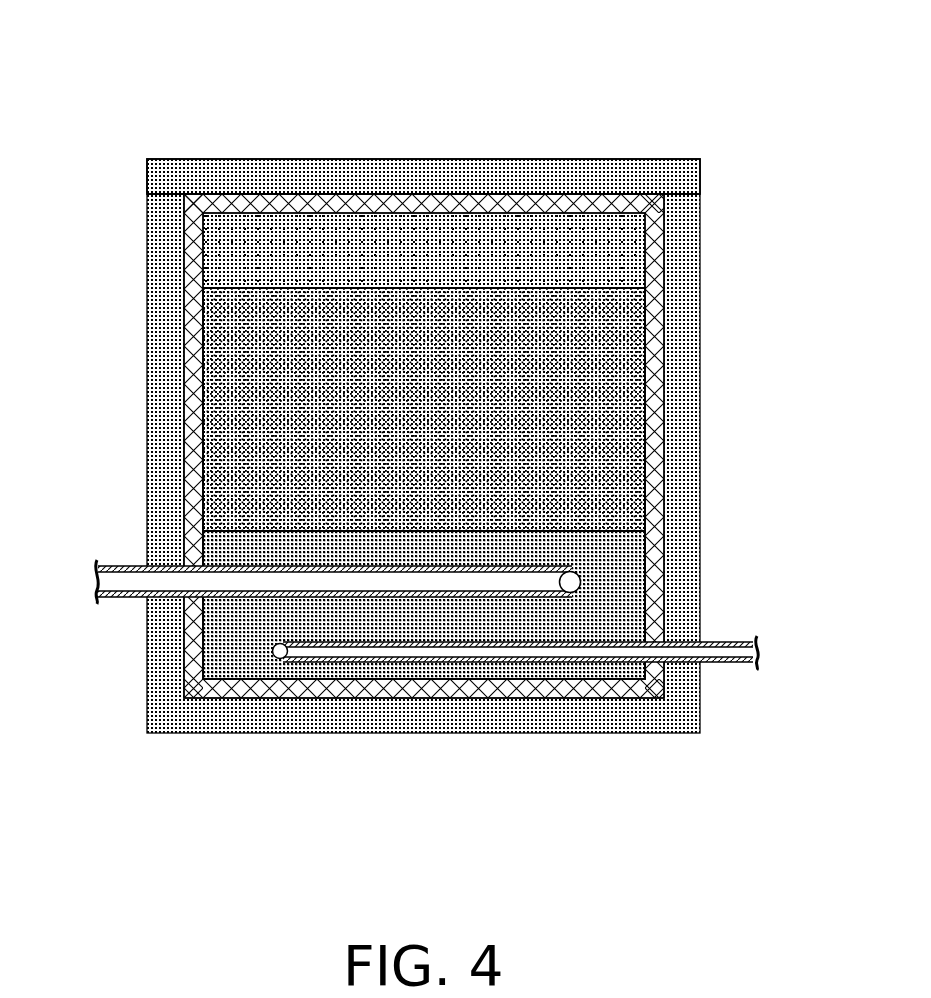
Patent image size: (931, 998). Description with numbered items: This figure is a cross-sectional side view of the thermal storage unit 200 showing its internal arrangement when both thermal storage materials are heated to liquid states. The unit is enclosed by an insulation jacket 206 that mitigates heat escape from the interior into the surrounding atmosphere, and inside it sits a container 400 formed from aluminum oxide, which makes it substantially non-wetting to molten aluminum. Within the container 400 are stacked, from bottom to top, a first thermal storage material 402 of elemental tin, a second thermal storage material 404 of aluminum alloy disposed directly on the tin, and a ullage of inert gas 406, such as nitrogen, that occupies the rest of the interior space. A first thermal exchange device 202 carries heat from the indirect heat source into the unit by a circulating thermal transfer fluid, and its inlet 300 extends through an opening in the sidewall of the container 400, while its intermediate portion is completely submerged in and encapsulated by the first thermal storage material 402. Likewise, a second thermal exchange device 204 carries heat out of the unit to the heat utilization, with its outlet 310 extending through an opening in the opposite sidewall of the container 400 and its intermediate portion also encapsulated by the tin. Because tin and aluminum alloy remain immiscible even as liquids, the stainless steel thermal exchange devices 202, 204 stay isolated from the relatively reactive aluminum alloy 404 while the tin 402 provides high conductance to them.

The thermal storage unit 200 is at (412, 411).
The first thermal exchange device 202 is at (248, 597).
The second thermal exchange device 204 is at (400, 660).
The insulation jacket 206 is at (305, 180).
The inlet 300 is at (112, 565).
The outlet 310 is at (740, 640).
The container 400 is at (525, 207).
The first thermal storage material 402 is at (608, 549).
The second thermal storage material 404 is at (236, 355).
The ullage of inert gas 406 is at (230, 256).